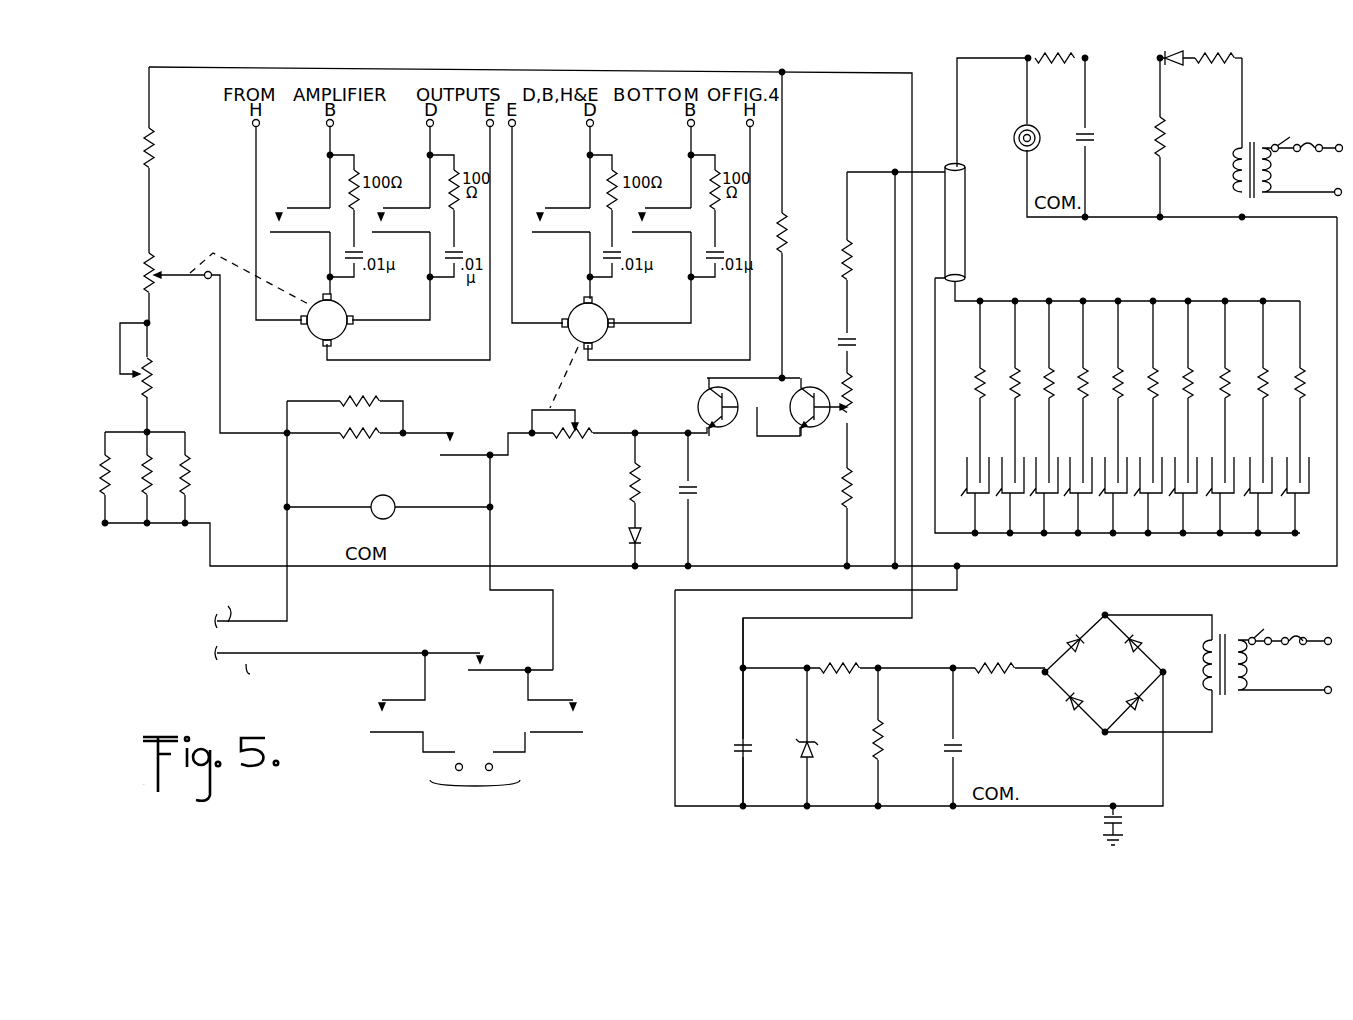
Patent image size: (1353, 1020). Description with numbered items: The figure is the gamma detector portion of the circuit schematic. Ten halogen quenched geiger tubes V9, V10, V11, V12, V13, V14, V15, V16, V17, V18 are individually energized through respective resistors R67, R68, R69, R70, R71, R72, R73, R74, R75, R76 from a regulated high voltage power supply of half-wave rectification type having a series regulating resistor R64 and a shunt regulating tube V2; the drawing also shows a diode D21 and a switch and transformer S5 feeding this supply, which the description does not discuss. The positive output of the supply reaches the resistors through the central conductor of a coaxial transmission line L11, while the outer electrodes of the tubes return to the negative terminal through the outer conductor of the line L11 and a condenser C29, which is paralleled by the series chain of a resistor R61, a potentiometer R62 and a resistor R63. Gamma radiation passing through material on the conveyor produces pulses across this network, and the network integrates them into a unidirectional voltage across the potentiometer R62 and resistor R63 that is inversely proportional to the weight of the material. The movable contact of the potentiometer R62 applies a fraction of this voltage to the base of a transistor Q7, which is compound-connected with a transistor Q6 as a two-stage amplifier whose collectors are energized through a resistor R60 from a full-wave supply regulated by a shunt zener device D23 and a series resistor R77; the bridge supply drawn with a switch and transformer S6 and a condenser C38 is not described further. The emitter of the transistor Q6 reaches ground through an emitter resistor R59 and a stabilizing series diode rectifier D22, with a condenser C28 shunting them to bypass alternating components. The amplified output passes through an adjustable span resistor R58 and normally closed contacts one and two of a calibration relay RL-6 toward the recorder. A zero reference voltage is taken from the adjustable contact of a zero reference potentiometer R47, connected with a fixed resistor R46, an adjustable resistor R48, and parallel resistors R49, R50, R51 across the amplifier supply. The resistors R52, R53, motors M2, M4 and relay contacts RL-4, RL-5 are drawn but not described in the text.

The fixed resistor R46 is at (140, 155).
The zero reference potentiometer R47 is at (136, 274).
The adjustable resistor R48 is at (150, 392).
The parallel connected resistor R49 is at (93, 481).
The parallel connected resistor R50 is at (132, 481).
The parallel connected resistor R51 is at (206, 483).
The 25K resistor R52 is at (388, 390).
The 800 ohm resistor R53 is at (388, 444).
The adjustable span resistor R58 is at (588, 446).
The emitter resistor R59 is at (633, 486).
The stabilizing series diode rectifier D22 is at (649, 532).
The condenser C28 is at (697, 486).
The transistor Q6 is at (695, 408).
The transistor Q7 is at (820, 394).
The resistor R60 is at (786, 243).
The resistor R61 is at (852, 275).
The condenser C29 is at (860, 348).
The potentiometer R62 is at (852, 414).
The resistor R63 is at (852, 501).
The coaxial transmission line L11 is at (960, 250).
The shunt regulating tube V2 is at (1012, 137).
The series regulating resistor R64 is at (1053, 81).
The diode D21 is at (1192, 81).
The switch with transformer S5 is at (1288, 156).
The resistor R67 is at (995, 396).
The resistor R68 is at (1030, 396).
The resistor R69 is at (1064, 396).
The resistor R70 is at (1098, 396).
The resistor R71 is at (1133, 396).
The resistor R72 is at (1168, 396).
The resistor R73 is at (1203, 396).
The resistor R74 is at (1240, 396).
The resistor R75 is at (1278, 396).
The resistor R76 is at (1315, 396).
The halogen quenched geiger tube V9 is at (964, 467).
The halogen quenched geiger tube V10 is at (1003, 467).
The halogen quenched geiger tube V11 is at (1038, 467).
The halogen quenched geiger tube V12 is at (1071, 467).
The halogen quenched geiger tube V13 is at (1107, 467).
The halogen quenched geiger tube V14 is at (1141, 467).
The halogen quenched geiger tube V15 is at (1177, 467).
The halogen quenched geiger tube V16 is at (1213, 467).
The halogen quenched geiger tube V17 is at (1252, 467).
The halogen quenched geiger tube V18 is at (1288, 467).
The motor M2 is at (327, 320).
The motor M4 is at (588, 323).
The relay RL-4 contacts RL-4 is at (350, 221).
The relay RL-5 contacts RL-5 is at (611, 221).
The calibration relay RL-6 is at (369, 717).
The series resistor R77 is at (833, 687).
The shunt zener device D23 is at (812, 762).
The 0.1 microfarad capacitor C38 is at (1128, 826).
The switch with transformer S6 is at (1267, 649).